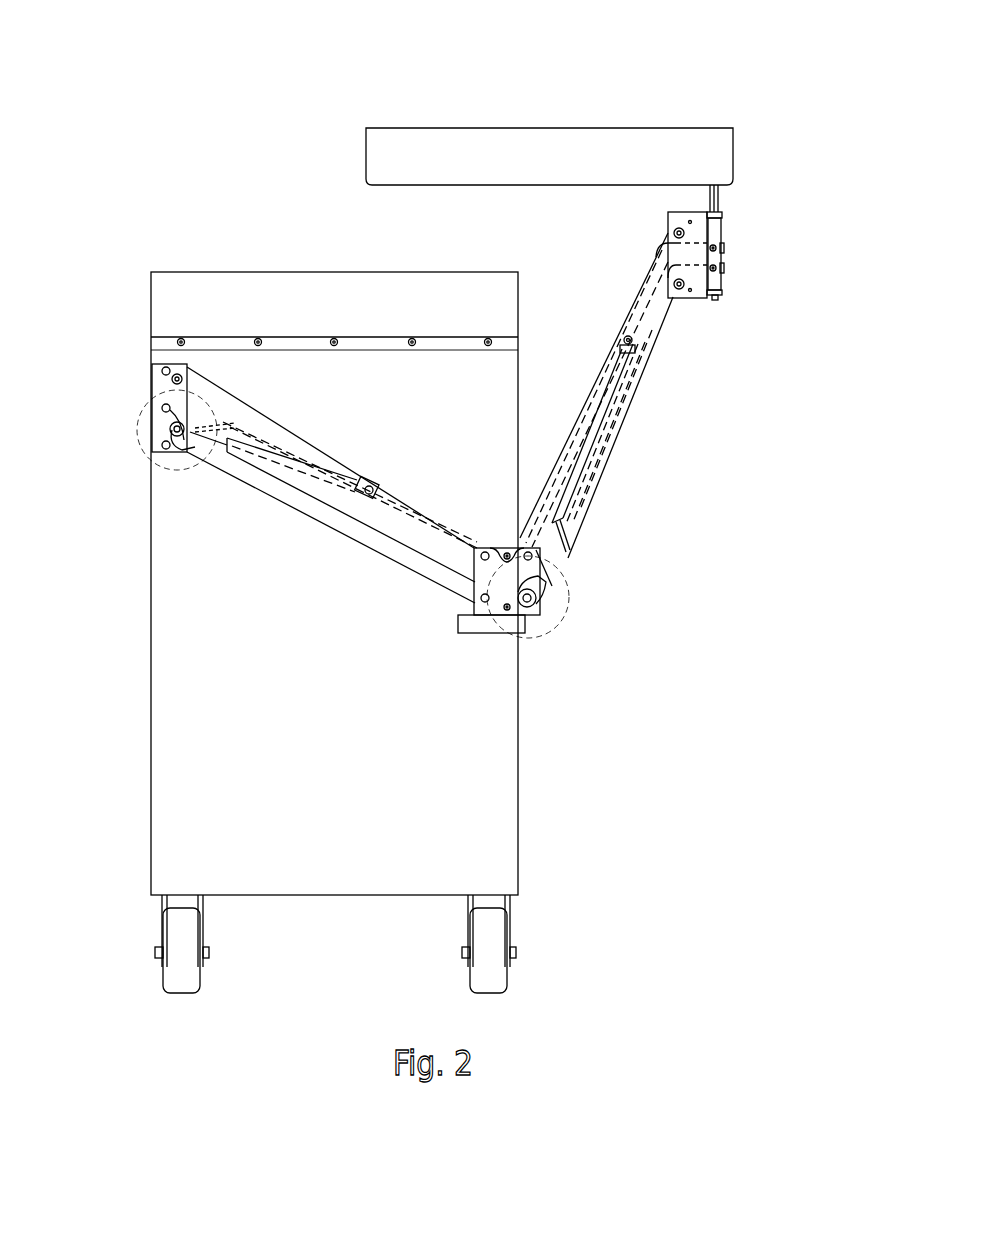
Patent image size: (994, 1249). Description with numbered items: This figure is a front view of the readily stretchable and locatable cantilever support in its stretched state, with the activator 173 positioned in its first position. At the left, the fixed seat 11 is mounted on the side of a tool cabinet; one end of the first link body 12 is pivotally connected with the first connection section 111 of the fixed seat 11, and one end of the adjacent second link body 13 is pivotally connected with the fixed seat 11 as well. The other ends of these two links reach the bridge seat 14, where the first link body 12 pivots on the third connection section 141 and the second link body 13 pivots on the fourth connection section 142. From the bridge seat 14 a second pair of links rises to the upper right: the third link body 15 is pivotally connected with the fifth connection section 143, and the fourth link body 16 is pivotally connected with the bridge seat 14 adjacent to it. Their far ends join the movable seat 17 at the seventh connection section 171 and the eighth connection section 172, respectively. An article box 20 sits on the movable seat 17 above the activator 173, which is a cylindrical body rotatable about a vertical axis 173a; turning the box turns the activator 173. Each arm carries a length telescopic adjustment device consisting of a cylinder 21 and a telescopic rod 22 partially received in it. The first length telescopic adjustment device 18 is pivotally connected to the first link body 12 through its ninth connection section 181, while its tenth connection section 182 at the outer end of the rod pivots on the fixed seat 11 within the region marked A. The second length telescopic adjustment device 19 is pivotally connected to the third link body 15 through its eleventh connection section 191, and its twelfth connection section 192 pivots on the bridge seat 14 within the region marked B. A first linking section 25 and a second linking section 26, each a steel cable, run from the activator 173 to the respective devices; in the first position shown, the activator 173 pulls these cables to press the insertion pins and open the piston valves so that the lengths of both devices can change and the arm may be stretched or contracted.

The article box 20 is at (550, 128).
The vertical axis 173a is at (715, 105).
The movable seat 17 is at (697, 294).
The activator 173 is at (722, 226).
The first linking section 25 is at (723, 247).
The second linking section 26 is at (723, 267).
The seventh connection section 171 is at (677, 230).
The eighth connection section 172 is at (707, 281).
The third link body 15 is at (676, 241).
The fourth link body 16 is at (677, 309).
The second length telescopic adjustment device 19 is at (596, 393).
The eleventh connection section 191 is at (632, 350).
The cylinder 21 is at (602, 420).
The telescopic rod 22 is at (556, 570).
The fifth connection section 143 is at (522, 545).
The bridge seat 14 is at (487, 614).
The third connection section 141 is at (473, 585).
The fourth connection section 142 is at (472, 603).
The twelfth connection section 192 is at (505, 633).
The detail region B is at (552, 633).
The fixed seat 11 is at (152, 382).
The first connection section 111 is at (175, 377).
The tenth connection section 182 is at (152, 409).
The detail region A is at (142, 452).
The first link body 12 is at (255, 422).
The second link body 13 is at (282, 490).
The first length telescopic adjustment device 18 is at (316, 482).
The ninth connection section 181 is at (365, 480).